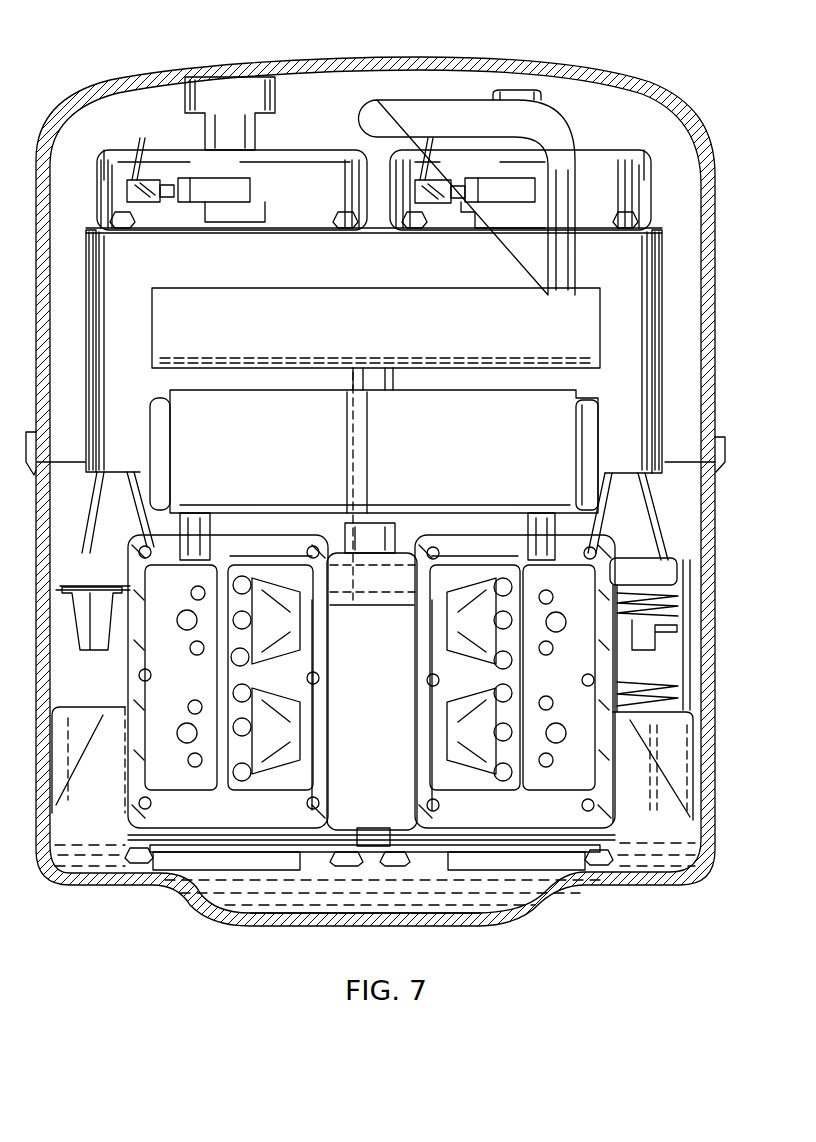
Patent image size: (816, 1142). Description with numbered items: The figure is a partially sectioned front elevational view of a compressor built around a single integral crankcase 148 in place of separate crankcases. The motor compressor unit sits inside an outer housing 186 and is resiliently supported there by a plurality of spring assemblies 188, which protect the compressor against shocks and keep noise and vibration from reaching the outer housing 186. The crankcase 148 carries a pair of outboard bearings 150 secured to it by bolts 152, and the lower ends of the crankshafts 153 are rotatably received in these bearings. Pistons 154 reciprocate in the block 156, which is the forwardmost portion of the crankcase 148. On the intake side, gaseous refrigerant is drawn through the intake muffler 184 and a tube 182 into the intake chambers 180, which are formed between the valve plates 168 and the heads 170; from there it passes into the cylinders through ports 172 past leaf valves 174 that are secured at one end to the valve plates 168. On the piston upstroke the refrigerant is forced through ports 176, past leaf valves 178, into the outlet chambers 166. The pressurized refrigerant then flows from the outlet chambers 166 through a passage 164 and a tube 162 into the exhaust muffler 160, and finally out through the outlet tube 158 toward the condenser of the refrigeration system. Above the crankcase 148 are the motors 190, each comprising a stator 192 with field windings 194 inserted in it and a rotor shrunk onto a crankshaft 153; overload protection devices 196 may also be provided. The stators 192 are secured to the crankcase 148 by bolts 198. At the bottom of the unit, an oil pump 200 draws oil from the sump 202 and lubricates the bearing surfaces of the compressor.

The crankcase 148 is at (126, 797).
The outboard bearings 150 is at (316, 838).
The bolts 152 is at (140, 865).
The crankshafts 153 is at (239, 100).
The pistons 154 is at (238, 578).
The block 156 is at (425, 737).
The outlet tube 158 is at (458, 110).
The exhaust muffler 160 is at (482, 300).
The tube 162 is at (407, 363).
The passage 164 is at (401, 614).
The outlet chambers 166 is at (374, 563).
The valve plates 168 is at (92, 700).
The heads 170 is at (133, 760).
The ports 172 is at (192, 700).
The leaf valves 174 is at (205, 596).
The ports 176 is at (522, 541).
The leaf valves 178 is at (437, 643).
The intake chambers 180 is at (180, 720).
The tube 182 is at (203, 525).
The intake muffler 184 is at (572, 399).
The outer housing 186 is at (613, 82).
The spring assemblies 188 is at (160, 645).
The motors 190 is at (111, 137).
The stators 192 is at (90, 334).
The field windings 194 is at (165, 152).
The overload protection devices 196 is at (264, 194).
The bolts 198 is at (112, 212).
The oil pump 200 is at (205, 872).
The sump 202 is at (488, 910).